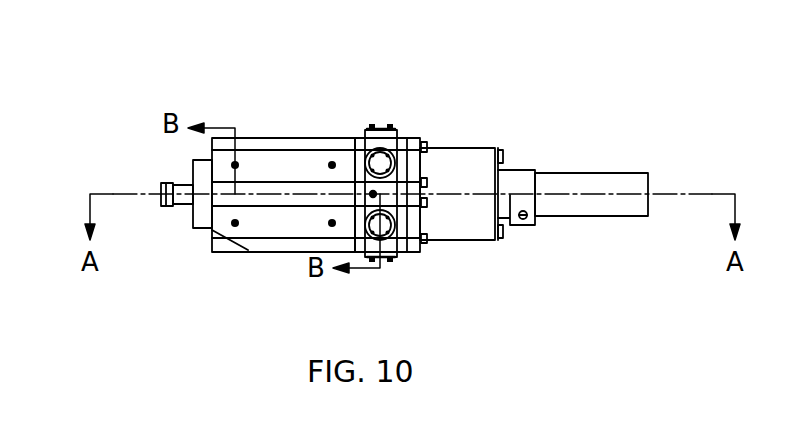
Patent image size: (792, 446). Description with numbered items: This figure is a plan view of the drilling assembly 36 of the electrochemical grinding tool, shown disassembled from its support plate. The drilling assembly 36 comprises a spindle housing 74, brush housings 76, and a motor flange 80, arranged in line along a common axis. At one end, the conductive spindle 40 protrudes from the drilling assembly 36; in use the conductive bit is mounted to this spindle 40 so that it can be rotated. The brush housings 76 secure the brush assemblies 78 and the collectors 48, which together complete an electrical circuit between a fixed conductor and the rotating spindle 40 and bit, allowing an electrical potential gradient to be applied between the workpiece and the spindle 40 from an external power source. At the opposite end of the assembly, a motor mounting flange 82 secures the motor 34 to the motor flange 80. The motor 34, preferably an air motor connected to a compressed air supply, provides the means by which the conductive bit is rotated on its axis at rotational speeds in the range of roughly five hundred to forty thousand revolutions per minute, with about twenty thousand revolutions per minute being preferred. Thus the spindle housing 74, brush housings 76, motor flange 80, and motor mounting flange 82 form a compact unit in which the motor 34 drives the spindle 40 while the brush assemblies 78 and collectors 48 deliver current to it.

The drilling assembly 36 is at (197, 70).
The conductive spindle 40 is at (178, 190).
The spindle housing 74 is at (270, 162).
The collectors 48 is at (370, 191).
The brush housings 76 is at (373, 142).
The brush assemblies 78 is at (395, 130).
The motor flange 80 is at (453, 160).
The motor mounting flange 82 is at (522, 178).
The motor 34 is at (603, 182).